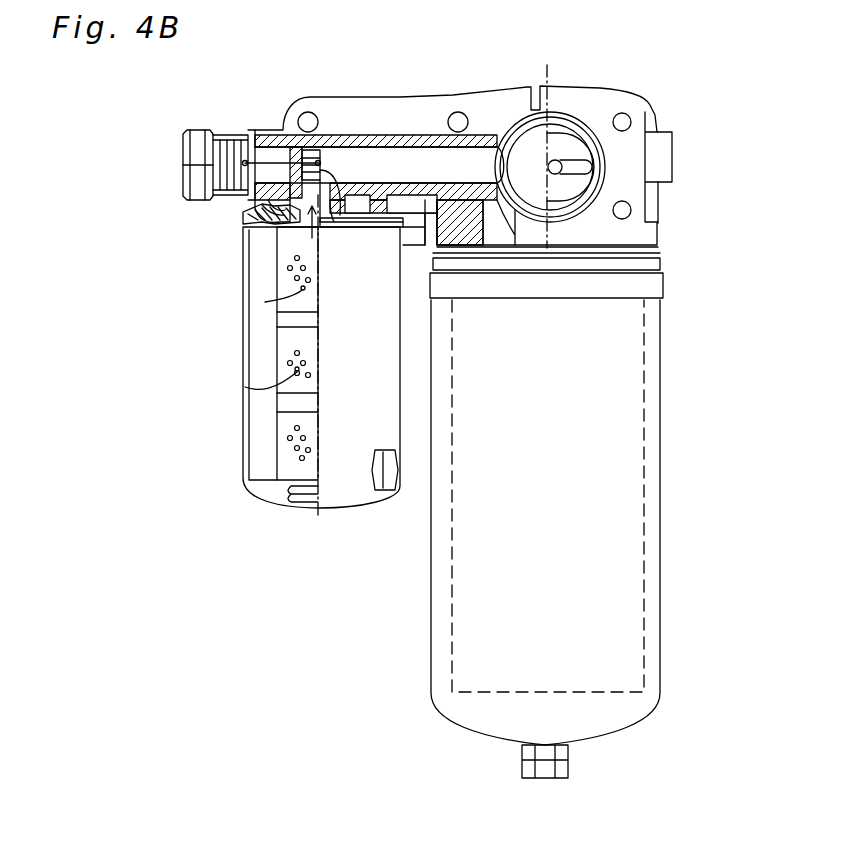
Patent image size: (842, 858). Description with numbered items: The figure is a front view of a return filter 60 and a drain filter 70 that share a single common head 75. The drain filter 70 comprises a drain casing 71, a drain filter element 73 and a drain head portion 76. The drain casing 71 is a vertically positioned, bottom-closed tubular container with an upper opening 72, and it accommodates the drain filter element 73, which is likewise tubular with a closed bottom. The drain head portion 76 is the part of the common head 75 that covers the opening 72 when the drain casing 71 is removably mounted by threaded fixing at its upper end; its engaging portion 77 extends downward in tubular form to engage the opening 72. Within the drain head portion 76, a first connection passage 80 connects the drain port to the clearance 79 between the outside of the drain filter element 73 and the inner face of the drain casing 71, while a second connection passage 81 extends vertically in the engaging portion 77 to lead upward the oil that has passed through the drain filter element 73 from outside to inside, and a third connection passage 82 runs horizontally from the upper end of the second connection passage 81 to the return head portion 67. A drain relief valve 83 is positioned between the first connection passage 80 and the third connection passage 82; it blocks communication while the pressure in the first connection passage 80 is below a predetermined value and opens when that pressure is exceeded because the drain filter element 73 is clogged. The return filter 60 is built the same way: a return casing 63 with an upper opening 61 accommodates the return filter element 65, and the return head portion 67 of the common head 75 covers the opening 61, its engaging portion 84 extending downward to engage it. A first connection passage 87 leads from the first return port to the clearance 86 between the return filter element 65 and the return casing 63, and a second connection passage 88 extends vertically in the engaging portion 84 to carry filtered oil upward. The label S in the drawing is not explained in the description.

The fuel filter canister 60 is at (682, 434).
The canister top flange 61 is at (505, 233).
The canister wall 63 is at (660, 648).
The filter element (dashed) 65 is at (644, 548).
The mounting head 67 is at (598, 104).
The sediment bowl assembly 70 is at (232, 433).
The sediment cup 71 is at (358, 498).
The perforations 72 is at (318, 268).
The spring 73 is at (288, 467).
The head top surface 75 is at (456, 86).
The valve body 76 is at (280, 146).
The valve seat 77 is at (258, 212).
The filter element 79 is at (243, 305).
The inlet fitting 80 is at (272, 143).
The plate 81 is at (312, 195).
The head body 82 is at (360, 155).
The valve spool 83 is at (282, 132).
The rotary valve 84 is at (533, 240).
The inner element 86 is at (452, 538).
The passage 87 is at (442, 241).
The seal ring 88 is at (535, 233).
The sediment S is at (320, 338).